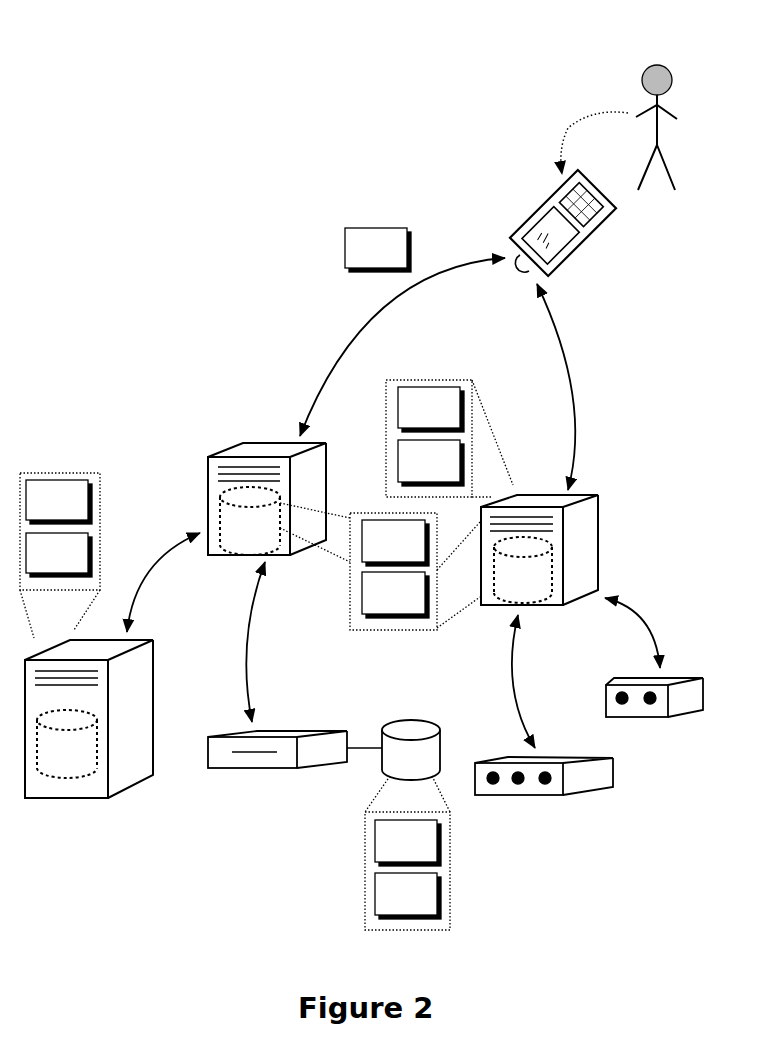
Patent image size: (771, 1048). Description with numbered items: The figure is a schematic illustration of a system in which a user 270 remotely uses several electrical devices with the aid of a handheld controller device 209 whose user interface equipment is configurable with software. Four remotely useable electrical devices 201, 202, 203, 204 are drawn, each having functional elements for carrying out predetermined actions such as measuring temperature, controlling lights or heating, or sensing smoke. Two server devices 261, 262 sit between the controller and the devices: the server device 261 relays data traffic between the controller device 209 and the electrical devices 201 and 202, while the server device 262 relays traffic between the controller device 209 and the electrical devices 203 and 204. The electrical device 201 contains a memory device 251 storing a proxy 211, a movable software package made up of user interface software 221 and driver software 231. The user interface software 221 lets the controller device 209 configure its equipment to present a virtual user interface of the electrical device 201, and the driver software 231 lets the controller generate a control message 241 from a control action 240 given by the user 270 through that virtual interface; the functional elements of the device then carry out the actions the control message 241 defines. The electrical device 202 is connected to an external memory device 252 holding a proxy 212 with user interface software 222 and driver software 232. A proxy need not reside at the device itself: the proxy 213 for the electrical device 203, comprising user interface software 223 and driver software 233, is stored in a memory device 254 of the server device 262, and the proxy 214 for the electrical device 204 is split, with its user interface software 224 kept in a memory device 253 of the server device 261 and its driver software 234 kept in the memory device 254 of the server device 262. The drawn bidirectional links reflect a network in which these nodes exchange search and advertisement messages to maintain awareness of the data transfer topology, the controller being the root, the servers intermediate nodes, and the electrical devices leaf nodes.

The electrical device 201 is at (89, 753).
The electrical device 202 is at (288, 768).
The electrical device 203 is at (553, 795).
The electrical device 204 is at (682, 718).
The controller device 209 is at (580, 247).
The proxy 211 is at (60, 518).
The proxy 212 is at (366, 853).
The proxy 213 is at (449, 415).
The proxy 214 is at (380, 595).
The user interface software 221 is at (59, 502).
The user interface software 222 is at (408, 843).
The user interface software 223 is at (431, 409).
The user interface software 224 is at (395, 543).
The driver software 231 is at (59, 555).
The driver software 232 is at (408, 896).
The driver software 233 is at (431, 463).
The driver software 234 is at (395, 595).
The control action 240 is at (565, 127).
The control message 241 is at (378, 250).
The memory device 251 is at (67, 744).
The memory device 252 is at (411, 750).
The memory device 253 is at (250, 521).
The memory device 254 is at (523, 570).
The server device 261 is at (267, 461).
The server device 262 is at (587, 550).
The user 270 is at (663, 66).